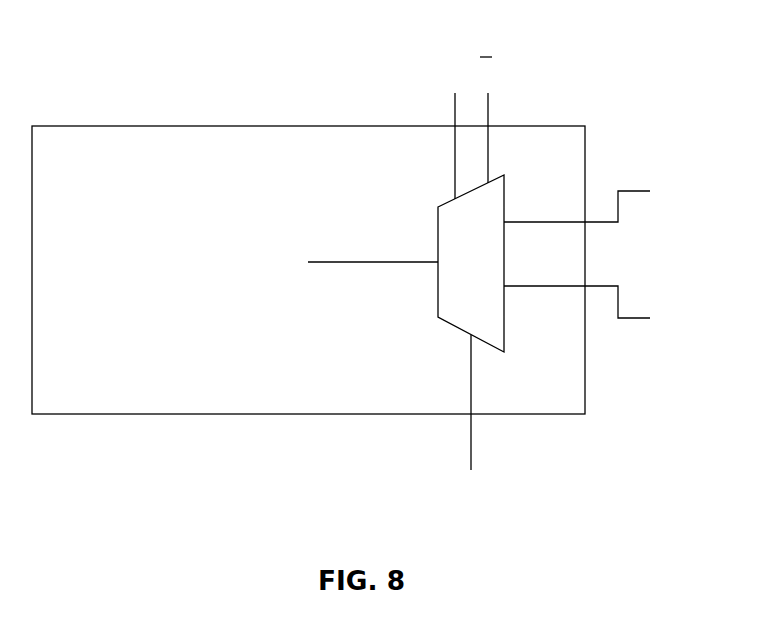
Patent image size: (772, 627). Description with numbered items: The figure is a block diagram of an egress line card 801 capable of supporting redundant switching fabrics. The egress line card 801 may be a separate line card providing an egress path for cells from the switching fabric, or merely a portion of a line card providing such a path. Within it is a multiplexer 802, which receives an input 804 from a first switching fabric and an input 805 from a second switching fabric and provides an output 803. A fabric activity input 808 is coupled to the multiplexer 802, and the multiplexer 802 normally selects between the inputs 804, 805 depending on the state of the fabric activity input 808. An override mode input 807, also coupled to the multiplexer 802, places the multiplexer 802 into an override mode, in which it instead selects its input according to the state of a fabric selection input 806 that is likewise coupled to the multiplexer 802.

The egress line card 801 is at (133, 125).
The multiplexer 802 is at (437, 228).
The output 803 is at (355, 264).
The input from first switching fabric 804 is at (616, 196).
The input from second switching fabric 805 is at (616, 304).
The fabric selection input 806 is at (489, 168).
The override mode input 807 is at (454, 166).
The fabric activity input 808 is at (472, 448).